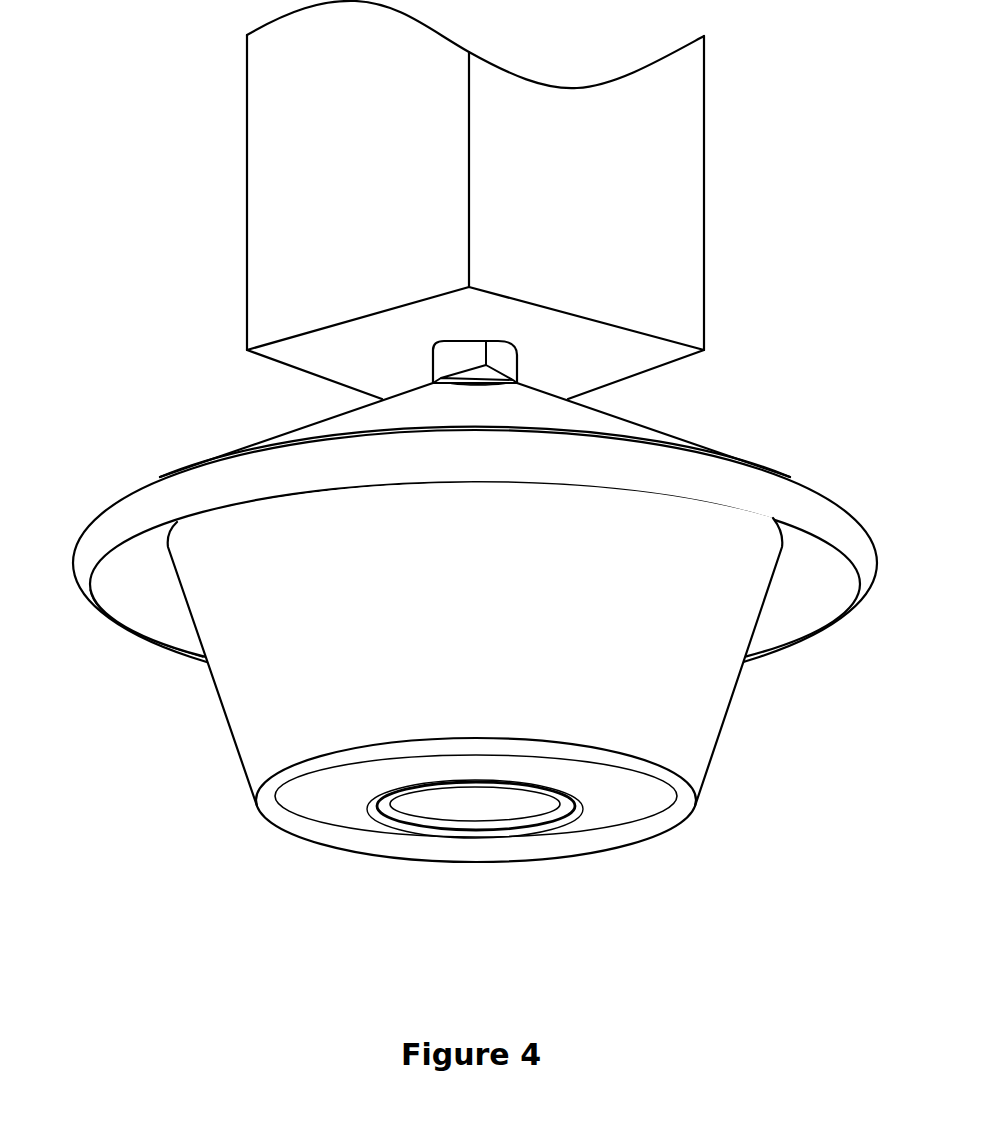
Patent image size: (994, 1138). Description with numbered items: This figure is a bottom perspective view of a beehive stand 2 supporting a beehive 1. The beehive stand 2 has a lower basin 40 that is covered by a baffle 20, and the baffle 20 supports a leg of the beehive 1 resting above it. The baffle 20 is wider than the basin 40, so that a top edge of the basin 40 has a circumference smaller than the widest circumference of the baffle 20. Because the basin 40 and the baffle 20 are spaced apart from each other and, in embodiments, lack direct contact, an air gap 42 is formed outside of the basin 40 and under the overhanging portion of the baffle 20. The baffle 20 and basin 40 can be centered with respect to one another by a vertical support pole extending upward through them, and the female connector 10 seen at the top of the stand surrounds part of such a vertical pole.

The beehive 1 is at (263, 219).
The beehive stand 2 is at (197, 485).
The female connector 10 is at (453, 359).
The baffle 20 is at (752, 487).
The basin 40 is at (727, 603).
The air gap 42 is at (158, 600).